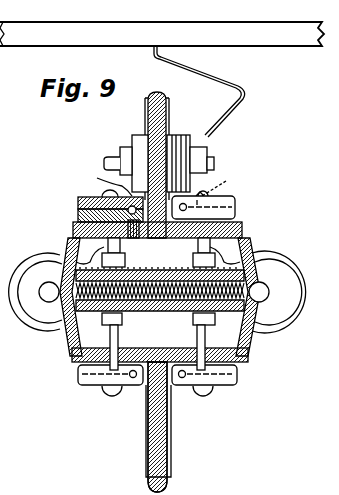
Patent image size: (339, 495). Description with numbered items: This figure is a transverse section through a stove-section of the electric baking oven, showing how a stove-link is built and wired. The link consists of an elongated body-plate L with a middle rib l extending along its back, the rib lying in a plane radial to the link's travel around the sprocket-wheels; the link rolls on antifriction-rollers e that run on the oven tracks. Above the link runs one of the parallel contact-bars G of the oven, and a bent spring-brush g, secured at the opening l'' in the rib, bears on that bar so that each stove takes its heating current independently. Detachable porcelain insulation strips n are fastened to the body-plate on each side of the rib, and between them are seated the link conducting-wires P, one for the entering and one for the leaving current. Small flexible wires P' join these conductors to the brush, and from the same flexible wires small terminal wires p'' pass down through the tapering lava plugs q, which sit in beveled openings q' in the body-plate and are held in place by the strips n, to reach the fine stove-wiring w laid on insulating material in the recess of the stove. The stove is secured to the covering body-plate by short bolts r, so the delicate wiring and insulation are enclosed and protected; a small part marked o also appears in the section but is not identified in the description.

The contact-bar G is at (162, 23).
The spring-brush g is at (210, 91).
The middle rib l is at (145, 292).
The opening in rib l'' is at (167, 431).
The insulation strips n is at (155, 300).
The body-plate L is at (242, 230).
The antifriction-rollers e is at (158, 293).
The conducting-wires P is at (209, 188).
The flexible wires P' is at (157, 181).
The terminal wires p'' is at (158, 252).
The lug o is at (155, 193).
The stove-wiring w is at (160, 278).
The lava plugs q is at (114, 252).
The beveled openings q' is at (158, 294).
The short bolts r is at (122, 250).